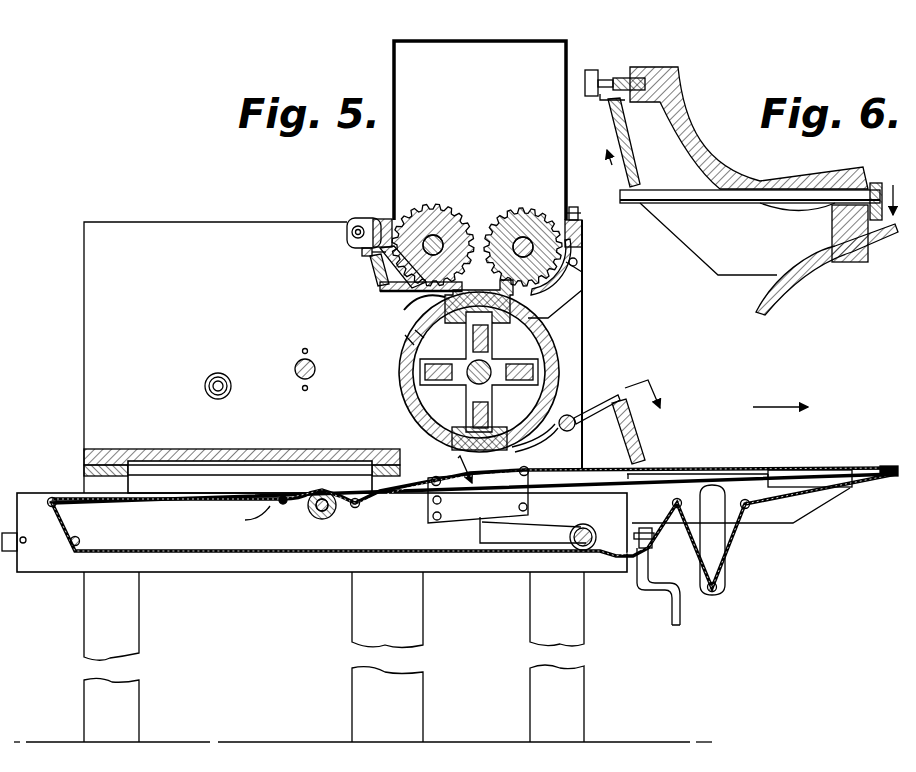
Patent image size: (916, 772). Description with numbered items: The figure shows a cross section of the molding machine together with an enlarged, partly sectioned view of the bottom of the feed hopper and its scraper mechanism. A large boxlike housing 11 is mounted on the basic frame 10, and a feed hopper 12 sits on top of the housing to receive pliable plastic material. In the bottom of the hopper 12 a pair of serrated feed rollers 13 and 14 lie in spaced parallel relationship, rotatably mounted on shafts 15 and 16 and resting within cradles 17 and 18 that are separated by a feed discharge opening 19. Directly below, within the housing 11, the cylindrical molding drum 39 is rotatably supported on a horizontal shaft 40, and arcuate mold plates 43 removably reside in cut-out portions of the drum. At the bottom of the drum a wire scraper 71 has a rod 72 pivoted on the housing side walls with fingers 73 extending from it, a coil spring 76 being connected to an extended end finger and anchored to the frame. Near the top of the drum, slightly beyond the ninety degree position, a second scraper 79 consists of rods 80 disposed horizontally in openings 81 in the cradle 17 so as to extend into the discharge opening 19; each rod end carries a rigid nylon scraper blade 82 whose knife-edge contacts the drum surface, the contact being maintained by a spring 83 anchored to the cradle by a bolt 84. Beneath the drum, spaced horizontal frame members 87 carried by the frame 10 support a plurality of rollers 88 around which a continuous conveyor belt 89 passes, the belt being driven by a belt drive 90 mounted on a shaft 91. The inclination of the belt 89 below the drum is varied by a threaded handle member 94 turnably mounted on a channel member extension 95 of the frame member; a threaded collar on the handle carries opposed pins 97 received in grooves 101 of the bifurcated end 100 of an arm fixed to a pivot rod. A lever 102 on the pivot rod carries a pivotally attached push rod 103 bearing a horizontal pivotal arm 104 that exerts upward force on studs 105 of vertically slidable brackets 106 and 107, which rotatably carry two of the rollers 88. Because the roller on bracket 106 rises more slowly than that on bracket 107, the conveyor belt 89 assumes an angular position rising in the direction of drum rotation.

In FIG. 5, the frame 10 is at (93, 605).
In FIG. 5, the housing 11 is at (192, 234).
In FIG. 5, the feed hopper 12 is at (395, 57).
In FIG. 5, the serrated feed roller 13 is at (412, 216).
In FIG. 5, the serrated feed roller 14 is at (536, 212).
In FIG. 5, the shaft 15 is at (450, 215).
In FIG. 5, the shaft 16 is at (510, 222).
In FIG. 5, the cradle 17 is at (384, 296).
In FIG. 6, the cradle 17 is at (690, 112).
In FIG. 5, the cradle 18 is at (576, 292).
In FIG. 5, the feed discharge opening 19 is at (487, 284).
In FIG. 5, the molding drum 39 is at (418, 426).
In FIG. 6, the molding drum 39 is at (790, 300).
In FIG. 5, the shaft 40 is at (494, 362).
In FIG. 5, the mold plate 43 is at (400, 400).
In FIG. 5, the wire scraper 71 is at (540, 446).
In FIG. 5, the rod 72 is at (566, 414).
In FIG. 5, the finger 73 is at (590, 410).
In FIG. 5, the coil spring 76 is at (620, 444).
In FIG. 5, the scraper 79 is at (432, 302).
In FIG. 6, the scraper 79 is at (872, 170).
In FIG. 5, the rod 80 is at (410, 293).
In FIG. 6, the rod 80 is at (698, 201).
In FIG. 6, the opening 81 is at (798, 210).
In FIG. 6, the scraper blade 82 is at (874, 244).
In FIG. 5, the spring 83 is at (376, 276).
In FIG. 6, the spring 83 is at (612, 140).
In FIG. 5, the bolt 84 is at (362, 256).
In FIG. 6, the bolt 84 is at (592, 69).
In FIG. 5, the frame member 87 is at (246, 565).
In FIG. 5, the roller 88 is at (80, 540).
In FIG. 5, the conveyor belt 89 is at (168, 500).
In FIG. 5, the belt drive 90 is at (300, 510).
In FIG. 5, the shaft 91 is at (330, 516).
In FIG. 5, the threaded handle member 94 is at (682, 609).
In FIG. 5, the channel member extension 95 is at (812, 504).
In FIG. 5, the pin 97 is at (588, 528).
In FIG. 5, the bifurcated end 100 is at (652, 546).
In FIG. 5, the groove 101 is at (655, 537).
In FIG. 5, the lever 102 is at (560, 532).
In FIG. 5, the push rod 103 is at (482, 530).
In FIG. 5, the pivotal arm 104 is at (466, 522).
In FIG. 5, the stud 105 is at (433, 518).
In FIG. 5, the bracket 106 is at (433, 500).
In FIG. 5, the bracket 107 is at (530, 505).